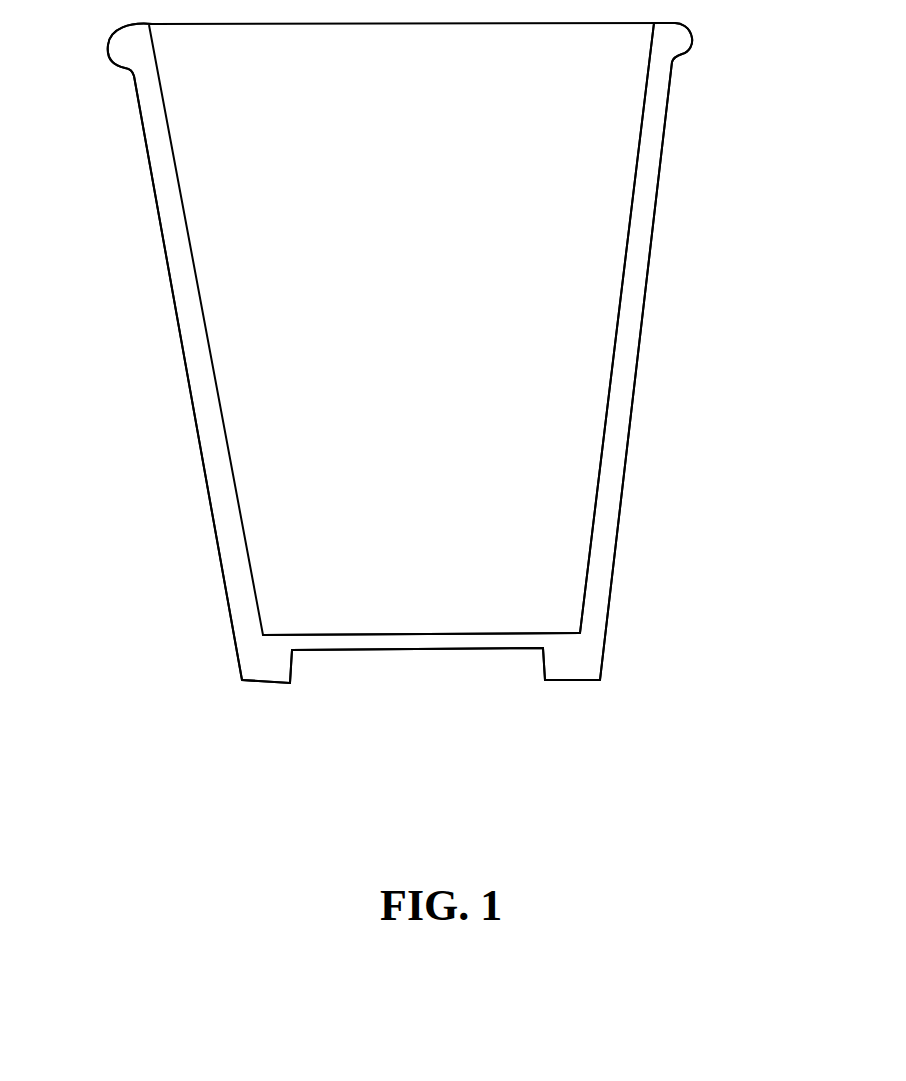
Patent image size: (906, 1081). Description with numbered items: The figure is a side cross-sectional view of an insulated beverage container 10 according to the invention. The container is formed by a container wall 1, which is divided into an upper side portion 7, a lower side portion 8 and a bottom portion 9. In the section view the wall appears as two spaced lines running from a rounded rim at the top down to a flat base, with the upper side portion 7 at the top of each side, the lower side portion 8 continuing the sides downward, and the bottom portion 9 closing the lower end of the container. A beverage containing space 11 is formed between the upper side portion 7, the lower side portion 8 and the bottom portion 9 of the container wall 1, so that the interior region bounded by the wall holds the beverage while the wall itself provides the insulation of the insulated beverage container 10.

The container wall 1 is at (426, 395).
The upper side portion 7 is at (684, 112).
The lower side portion 8 is at (632, 517).
The bottom portion 9 is at (426, 680).
The insulated beverage container 10 is at (773, 346).
The beverage containing space 11 is at (442, 265).